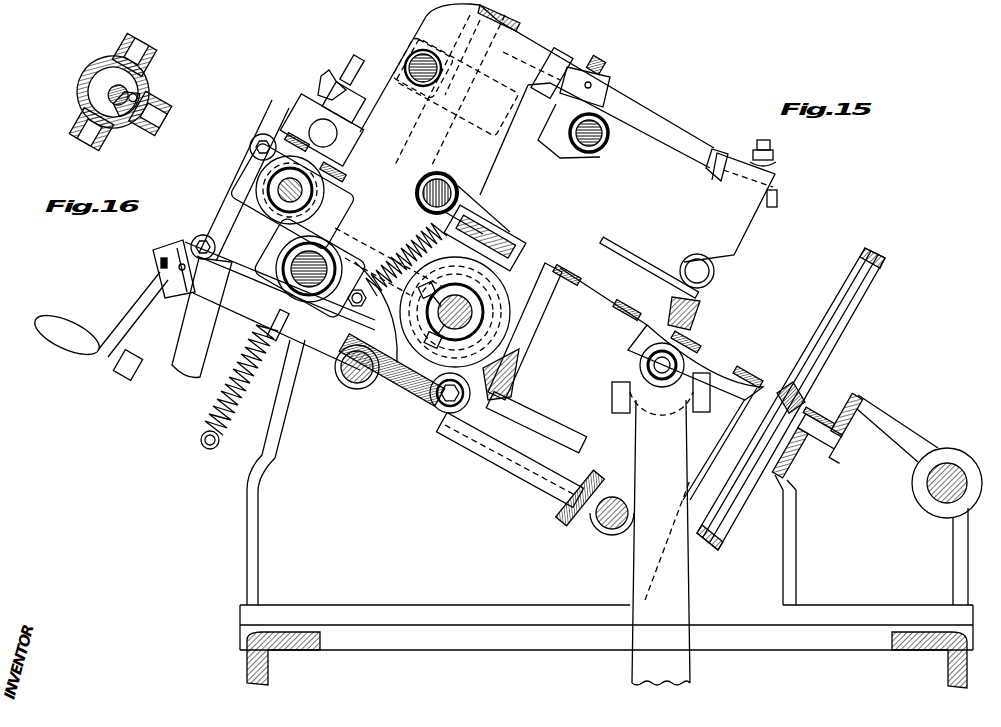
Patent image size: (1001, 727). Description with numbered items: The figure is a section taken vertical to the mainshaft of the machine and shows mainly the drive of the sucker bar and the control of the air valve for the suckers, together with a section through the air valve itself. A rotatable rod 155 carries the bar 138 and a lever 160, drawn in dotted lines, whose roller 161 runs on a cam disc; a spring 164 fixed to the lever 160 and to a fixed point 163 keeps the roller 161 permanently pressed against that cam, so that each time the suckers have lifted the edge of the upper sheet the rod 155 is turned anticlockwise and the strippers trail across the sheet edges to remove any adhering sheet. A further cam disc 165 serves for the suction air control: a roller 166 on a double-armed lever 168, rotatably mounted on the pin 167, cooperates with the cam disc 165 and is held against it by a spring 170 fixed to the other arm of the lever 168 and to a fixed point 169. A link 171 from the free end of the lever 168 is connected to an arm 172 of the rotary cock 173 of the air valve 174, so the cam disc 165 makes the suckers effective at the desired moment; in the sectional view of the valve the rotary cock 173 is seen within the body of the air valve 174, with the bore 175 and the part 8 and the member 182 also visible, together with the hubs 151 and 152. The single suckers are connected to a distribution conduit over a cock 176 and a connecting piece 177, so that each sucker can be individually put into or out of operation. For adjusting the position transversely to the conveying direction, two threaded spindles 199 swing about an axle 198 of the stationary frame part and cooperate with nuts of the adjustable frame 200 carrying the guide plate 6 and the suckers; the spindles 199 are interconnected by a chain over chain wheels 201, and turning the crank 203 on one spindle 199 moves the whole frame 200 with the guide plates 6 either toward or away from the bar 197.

In FIG. 15, the guide plate 6 is at (606, 256).
In FIG. 15, the frame 8 is at (523, 300).
In FIG. 15, the bar 138 is at (490, 240).
In FIG. 15, the hub 151 is at (505, 318).
In FIG. 15, the disc 152 is at (500, 292).
In FIG. 15, the rotatable rod 155 is at (420, 182).
In FIG. 15, the lever 160 is at (480, 212).
In FIG. 15, the roller 161 is at (540, 290).
In FIG. 15, the fixed point 163 is at (297, 333).
In FIG. 15, the spring 164 is at (405, 230).
In FIG. 15, the cam disc 165 is at (520, 372).
In FIG. 15, the roller 166 is at (458, 440).
In FIG. 15, the pin 167 is at (350, 386).
In FIG. 15, the double-armed lever 168 is at (260, 305).
In FIG. 15, the fixed point 169 is at (206, 447).
In FIG. 15, the spring 170 is at (225, 397).
In FIG. 15, the link 171 is at (232, 200).
In FIG. 15, the arm 172 is at (266, 182).
In FIG. 16, the rotary cock 173 is at (150, 101).
In FIG. 15, the rotary cock 173 is at (314, 191).
In FIG. 16, the air valve 174 is at (88, 72).
In FIG. 15, the air valve 174 is at (306, 140).
In FIG. 15, the bore 175 is at (338, 134).
In FIG. 15, the cock 176 is at (326, 78).
In FIG. 15, the connecting piece 177 is at (362, 62).
In FIG. 15, the bracket 182 is at (698, 313).
In FIG. 15, the bar 197 is at (843, 398).
In FIG. 15, the axle 198 is at (607, 532).
In FIG. 15, the threaded spindle 199 is at (430, 410).
In FIG. 15, the adjustable frame 200 is at (508, 380).
In FIG. 15, the chain wheel 201 is at (566, 518).
In FIG. 15, the crank 203 is at (143, 303).